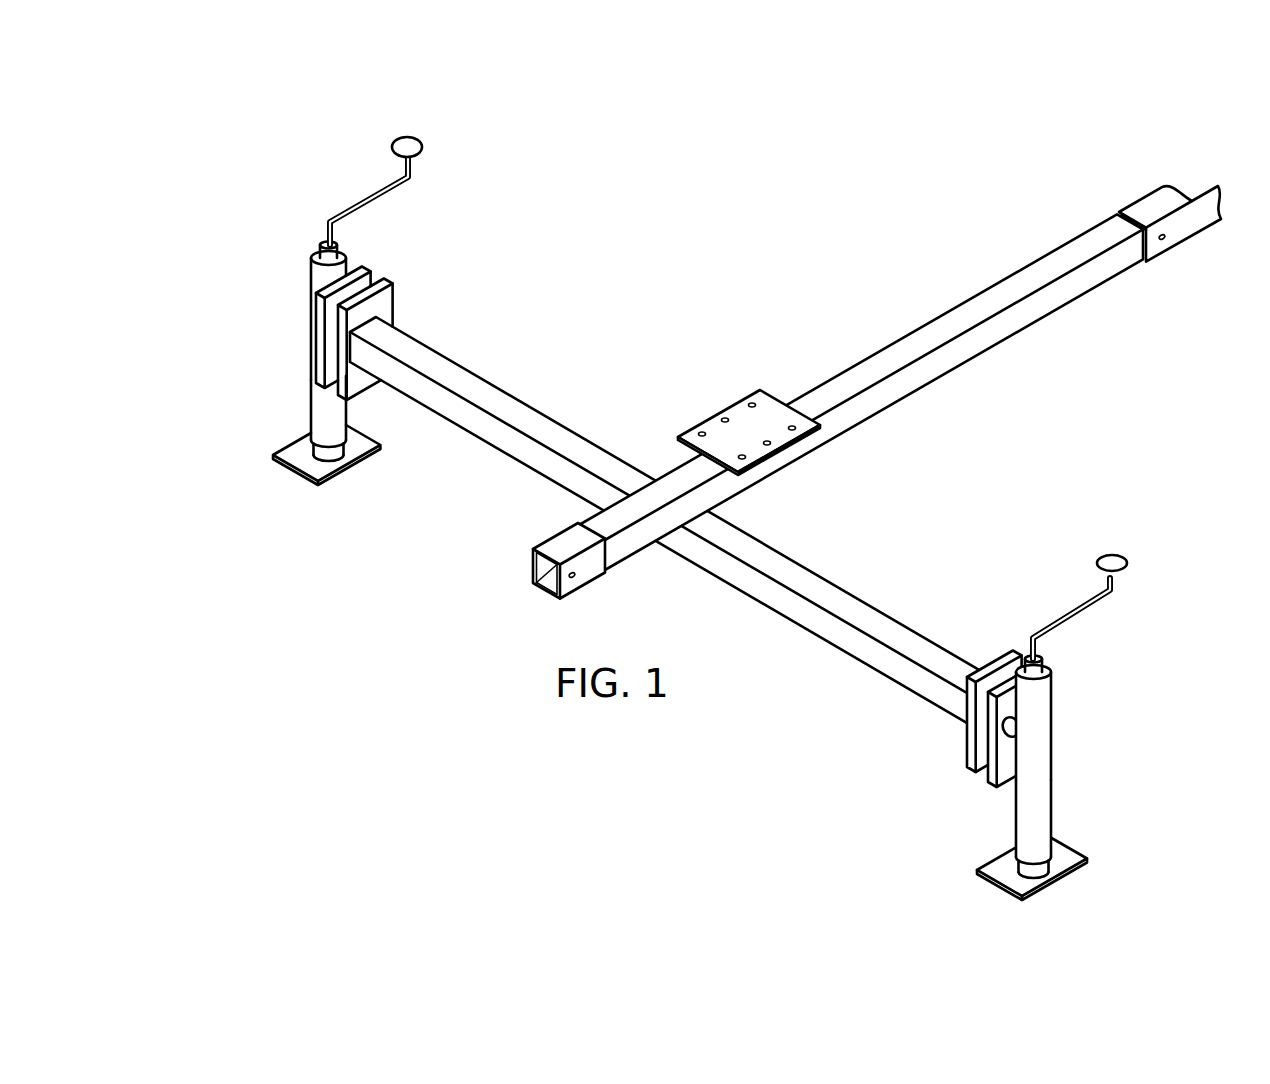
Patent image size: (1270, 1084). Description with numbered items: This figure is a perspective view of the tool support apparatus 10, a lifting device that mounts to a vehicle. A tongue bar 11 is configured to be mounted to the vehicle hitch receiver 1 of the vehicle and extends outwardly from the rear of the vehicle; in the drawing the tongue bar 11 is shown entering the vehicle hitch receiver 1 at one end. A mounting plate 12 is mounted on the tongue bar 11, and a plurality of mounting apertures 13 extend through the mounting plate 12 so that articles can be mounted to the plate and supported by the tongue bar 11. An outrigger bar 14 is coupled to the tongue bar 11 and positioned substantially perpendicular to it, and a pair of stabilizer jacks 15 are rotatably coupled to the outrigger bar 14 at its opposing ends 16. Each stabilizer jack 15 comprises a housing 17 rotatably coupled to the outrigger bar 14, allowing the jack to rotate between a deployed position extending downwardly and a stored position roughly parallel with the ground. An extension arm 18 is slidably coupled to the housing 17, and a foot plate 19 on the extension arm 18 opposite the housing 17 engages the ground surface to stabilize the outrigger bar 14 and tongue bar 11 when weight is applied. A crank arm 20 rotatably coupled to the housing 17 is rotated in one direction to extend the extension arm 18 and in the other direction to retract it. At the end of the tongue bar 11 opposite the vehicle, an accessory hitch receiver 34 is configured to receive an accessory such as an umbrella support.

The vehicle hitch receiver 1 is at (1183, 228).
The tool support apparatus 10 is at (704, 212).
The tongue bar 11 is at (975, 342).
The mounting plate 12 is at (768, 403).
The mounting apertures 13 is at (767, 443).
The outrigger bar 14 is at (813, 627).
The stabilizer jacks 15 is at (311, 347).
The opposing ends 16 is at (387, 323).
The housing 17 is at (325, 413).
The extension arm 18 is at (330, 450).
The foot plate 19 is at (303, 460).
The crank arm 20 is at (370, 192).
The accessory hitch receiver 34 is at (560, 547).